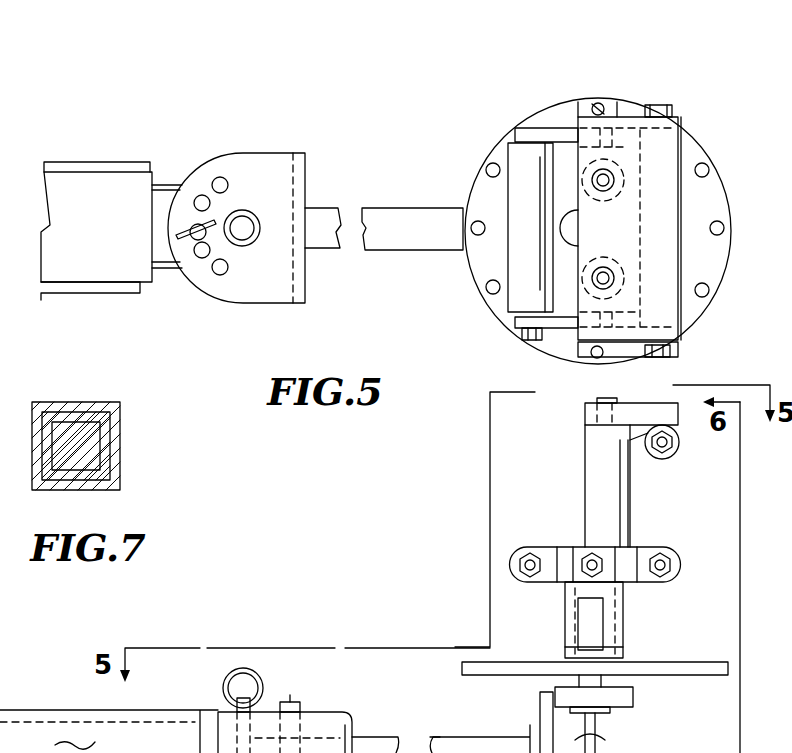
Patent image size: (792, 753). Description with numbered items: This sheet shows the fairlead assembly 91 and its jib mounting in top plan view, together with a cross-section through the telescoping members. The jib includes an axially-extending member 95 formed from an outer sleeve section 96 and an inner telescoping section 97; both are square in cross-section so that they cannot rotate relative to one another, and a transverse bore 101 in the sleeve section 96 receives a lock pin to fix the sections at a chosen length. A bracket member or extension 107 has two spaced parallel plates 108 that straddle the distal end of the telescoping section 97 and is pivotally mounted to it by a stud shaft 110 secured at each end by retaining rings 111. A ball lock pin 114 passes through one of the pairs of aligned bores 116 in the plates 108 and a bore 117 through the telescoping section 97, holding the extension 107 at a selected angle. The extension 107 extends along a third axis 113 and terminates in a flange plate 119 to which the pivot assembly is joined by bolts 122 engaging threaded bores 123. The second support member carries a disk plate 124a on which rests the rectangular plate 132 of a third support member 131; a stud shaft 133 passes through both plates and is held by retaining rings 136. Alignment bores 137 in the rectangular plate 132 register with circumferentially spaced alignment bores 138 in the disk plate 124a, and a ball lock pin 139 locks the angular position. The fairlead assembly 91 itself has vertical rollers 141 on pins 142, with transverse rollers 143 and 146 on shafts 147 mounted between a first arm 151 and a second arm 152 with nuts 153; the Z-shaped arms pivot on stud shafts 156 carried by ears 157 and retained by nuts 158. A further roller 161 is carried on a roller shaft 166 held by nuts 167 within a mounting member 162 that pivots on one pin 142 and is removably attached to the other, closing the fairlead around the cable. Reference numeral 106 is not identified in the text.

In FIG. 5, the fairlead assembly 91 is at (703, 194).
In FIG. 5, the axially-extending member 95 is at (62, 706).
In FIG. 5, the outer sleeve section 96 is at (128, 168).
In FIG. 7, the outer sleeve section 96 is at (112, 460).
In FIG. 5, the telescoping section 97 is at (168, 185).
In FIG. 7, the telescoping section 97 is at (120, 428).
In FIG. 5, the transverse bore 101 is at (70, 752).
In FIG. 5, the drive block 106 is at (100, 162).
In FIG. 5, the extension 107 is at (434, 207).
In FIG. 5, the parallel plates 108 is at (247, 155).
In FIG. 5, the stud shaft 110 is at (248, 228).
In FIG. 5, the retaining rings 111 is at (260, 220).
In FIG. 5, the third axis 113 is at (712, 750).
In FIG. 5, the ball lock pin 114 is at (185, 240).
In FIG. 5, the aligned bores 116 is at (225, 185).
In FIG. 5, the bore 117 is at (225, 742).
In FIG. 5, the flange plate 119 is at (538, 725).
In FIG. 5, the bolts 122 is at (605, 735).
In FIG. 5, the threaded bores 123 is at (518, 740).
In FIG. 5, the disk plate 124a is at (708, 152).
In FIG. 5, the third support member 131 is at (622, 630).
In FIG. 5, the rectangular plate 132 is at (617, 117).
In FIG. 5, the stud shaft 133 is at (587, 618).
In FIG. 5, the retaining ring 136 is at (622, 592).
In FIG. 5, the angular alignment bores 137 is at (580, 357).
In FIG. 5, the alignment bores 138 is at (718, 230).
In FIG. 5, the ball lock pin 139 is at (597, 103).
In FIG. 5, the rollers 141 is at (622, 486).
In FIG. 5, the pins 142 is at (610, 178).
In FIG. 5, the roller 143 is at (680, 560).
In FIG. 5, the roller 146 is at (510, 152).
In FIG. 5, the shafts 147 is at (522, 338).
In FIG. 5, the first arm 151 is at (556, 128).
In FIG. 5, the second arm 152 is at (556, 330).
In FIG. 5, the nut 153 is at (507, 325).
In FIG. 5, the stud shafts 156 is at (660, 105).
In FIG. 5, the ears 157 is at (570, 117).
In FIG. 5, the nuts 158 is at (572, 548).
In FIG. 5, the roller 161 is at (684, 235).
In FIG. 5, the mounting member 162 is at (678, 117).
In FIG. 5, the roller shaft 166 is at (600, 410).
In FIG. 5, the nuts 167 is at (632, 444).